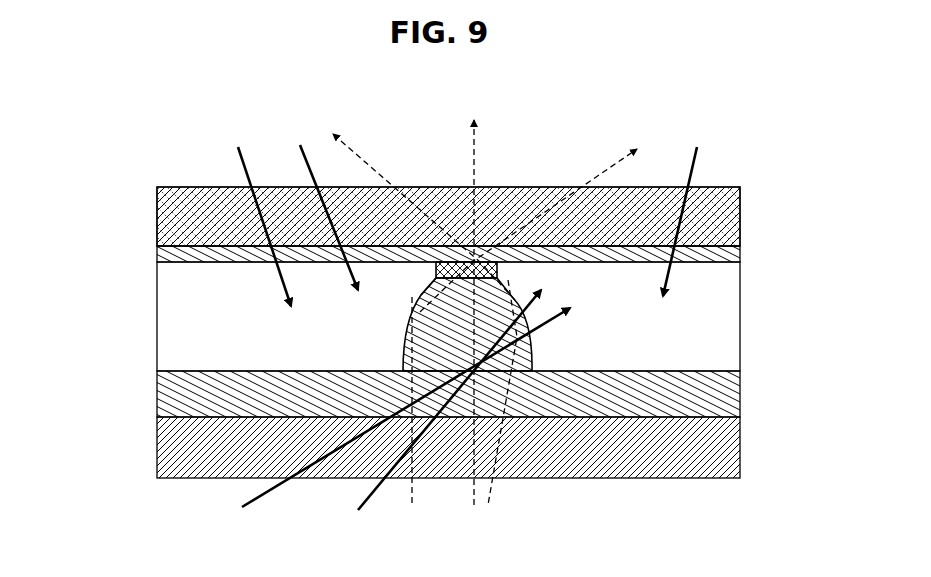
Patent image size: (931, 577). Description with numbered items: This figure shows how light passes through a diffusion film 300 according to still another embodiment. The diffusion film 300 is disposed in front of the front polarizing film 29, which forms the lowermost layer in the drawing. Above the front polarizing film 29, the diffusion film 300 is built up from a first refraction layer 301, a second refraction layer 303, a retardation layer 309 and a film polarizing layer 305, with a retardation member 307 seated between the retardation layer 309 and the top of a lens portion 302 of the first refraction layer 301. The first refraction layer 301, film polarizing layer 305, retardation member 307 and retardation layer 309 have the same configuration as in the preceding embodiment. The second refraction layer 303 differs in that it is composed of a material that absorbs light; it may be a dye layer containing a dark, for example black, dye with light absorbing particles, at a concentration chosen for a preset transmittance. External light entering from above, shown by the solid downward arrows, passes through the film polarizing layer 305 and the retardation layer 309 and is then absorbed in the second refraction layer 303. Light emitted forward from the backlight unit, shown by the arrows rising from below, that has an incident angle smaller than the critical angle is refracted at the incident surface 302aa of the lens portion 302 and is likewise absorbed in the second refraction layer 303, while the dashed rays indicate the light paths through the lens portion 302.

The diffusion film 300 is at (140, 312).
The front polarizing film 29 is at (742, 445).
The first refraction layer 301 is at (742, 393).
The second refraction layer 303 is at (742, 311).
The film polarizing layer 305 is at (742, 214).
The retardation layer 309 is at (742, 257).
The retardation member 307 is at (436, 271).
The lens portion 302 is at (505, 300).
The incident surface 302aa is at (394, 272).